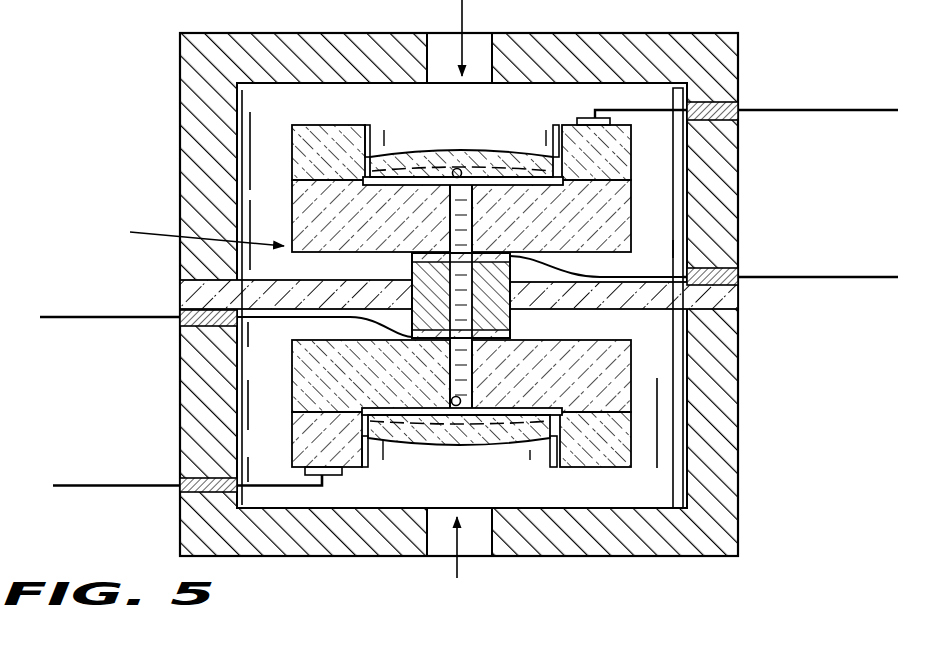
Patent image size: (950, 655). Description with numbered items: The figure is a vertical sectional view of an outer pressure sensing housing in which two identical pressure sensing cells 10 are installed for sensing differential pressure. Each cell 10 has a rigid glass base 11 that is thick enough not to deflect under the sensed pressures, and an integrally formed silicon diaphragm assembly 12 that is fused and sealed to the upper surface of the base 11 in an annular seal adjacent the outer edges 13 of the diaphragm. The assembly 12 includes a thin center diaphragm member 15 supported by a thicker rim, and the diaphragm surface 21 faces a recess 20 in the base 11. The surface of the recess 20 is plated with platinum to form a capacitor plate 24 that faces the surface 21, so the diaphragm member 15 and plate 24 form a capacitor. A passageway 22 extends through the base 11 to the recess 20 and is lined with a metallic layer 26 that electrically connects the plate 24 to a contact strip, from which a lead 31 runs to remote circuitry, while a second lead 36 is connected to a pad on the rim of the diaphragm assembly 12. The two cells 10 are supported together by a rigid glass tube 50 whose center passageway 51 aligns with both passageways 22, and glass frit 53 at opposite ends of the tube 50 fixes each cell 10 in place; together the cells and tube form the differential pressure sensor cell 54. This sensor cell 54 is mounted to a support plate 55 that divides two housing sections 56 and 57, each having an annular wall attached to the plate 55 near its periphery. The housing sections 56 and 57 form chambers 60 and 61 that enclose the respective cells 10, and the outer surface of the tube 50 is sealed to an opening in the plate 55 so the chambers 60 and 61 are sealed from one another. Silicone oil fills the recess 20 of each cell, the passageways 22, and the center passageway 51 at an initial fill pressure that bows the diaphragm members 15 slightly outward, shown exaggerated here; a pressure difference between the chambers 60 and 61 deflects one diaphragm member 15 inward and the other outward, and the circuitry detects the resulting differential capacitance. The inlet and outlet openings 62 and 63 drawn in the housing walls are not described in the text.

The pressure sensing cell 10 is at (290, 166).
The base 11 is at (597, 213).
The diaphragm assembly 12 is at (322, 147).
The outer edges of the diaphragm 13 is at (324, 186).
The diaphragm member 15 is at (407, 158).
The recess 20 is at (446, 420).
The diaphragm surface 21 is at (462, 170).
The passageway 22 is at (465, 190).
The capacitor plate 24 is at (509, 180).
The metallic layer 26 is at (464, 238).
The lead 31 is at (647, 270).
The lead 36 is at (656, 113).
The glass tube 50 is at (425, 274).
The center passageway 51 is at (460, 322).
The glass frit 53 is at (412, 253).
The differential pressure sensor cell 54 is at (191, 233).
The support plate 55 is at (738, 297).
The housing section 56 is at (603, 50).
The housing section 57 is at (720, 522).
The chamber 60 is at (668, 96).
The chamber 61 is at (660, 374).
The inlet 62 is at (480, 44).
The outlet 63 is at (475, 540).